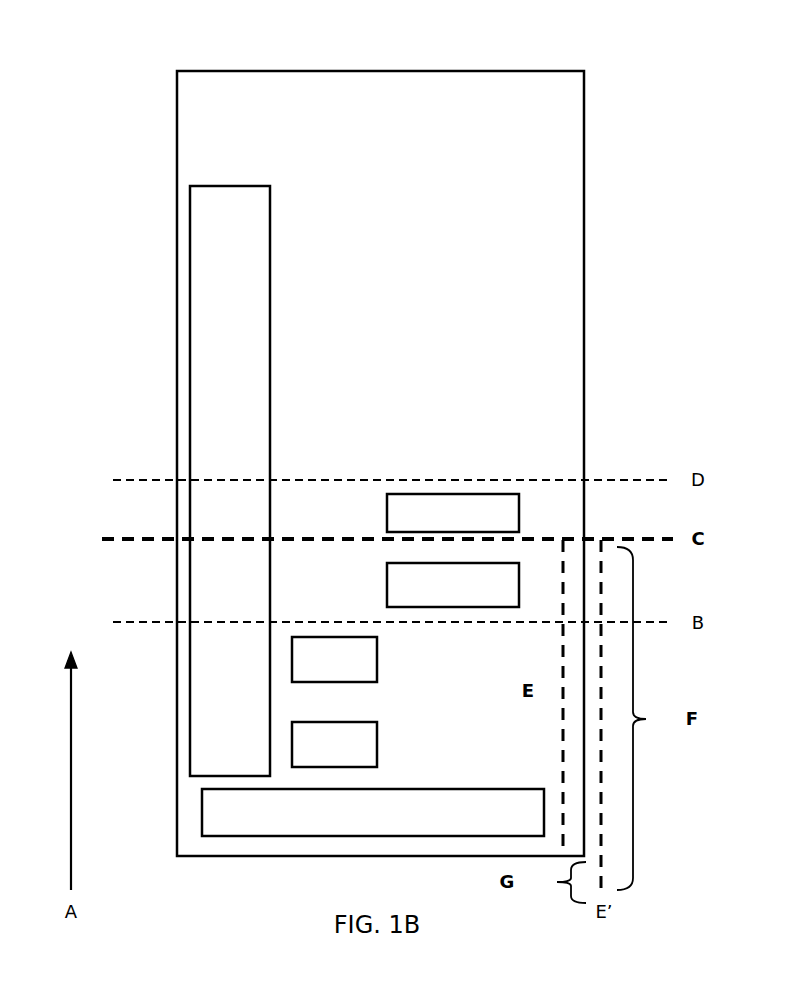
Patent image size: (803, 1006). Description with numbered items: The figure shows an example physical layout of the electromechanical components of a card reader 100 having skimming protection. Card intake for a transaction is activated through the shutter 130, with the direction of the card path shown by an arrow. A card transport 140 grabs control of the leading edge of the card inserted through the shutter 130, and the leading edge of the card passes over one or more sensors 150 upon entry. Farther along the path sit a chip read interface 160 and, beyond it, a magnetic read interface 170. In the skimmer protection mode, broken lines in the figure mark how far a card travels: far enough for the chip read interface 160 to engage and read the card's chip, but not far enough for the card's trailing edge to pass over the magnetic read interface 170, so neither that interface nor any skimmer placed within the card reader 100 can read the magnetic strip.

The card reader 100 is at (357, 115).
The shutter 130 is at (358, 820).
The card transport 140 is at (206, 216).
The sensors 150 is at (319, 666).
The chip read interface 160 is at (438, 593).
The magnetic read interface 170 is at (438, 523).